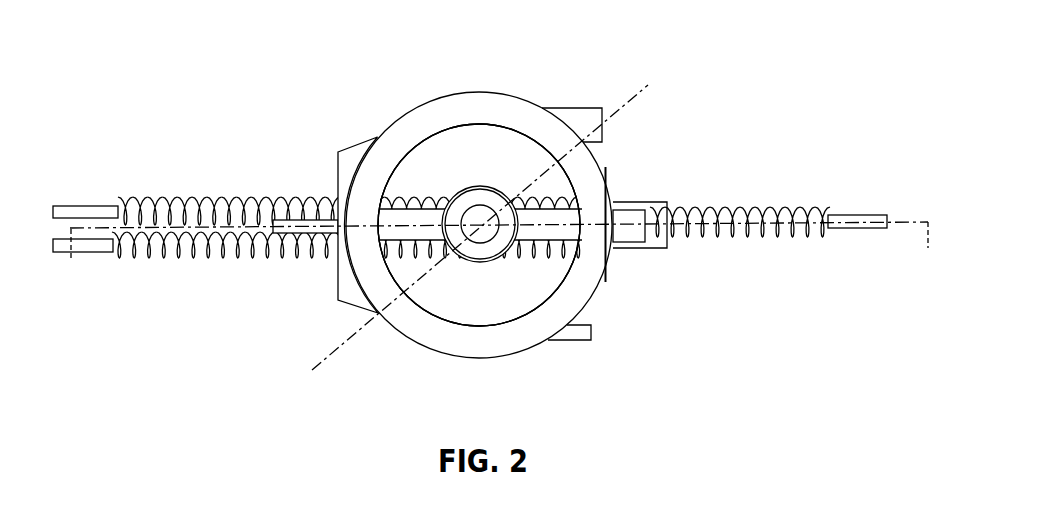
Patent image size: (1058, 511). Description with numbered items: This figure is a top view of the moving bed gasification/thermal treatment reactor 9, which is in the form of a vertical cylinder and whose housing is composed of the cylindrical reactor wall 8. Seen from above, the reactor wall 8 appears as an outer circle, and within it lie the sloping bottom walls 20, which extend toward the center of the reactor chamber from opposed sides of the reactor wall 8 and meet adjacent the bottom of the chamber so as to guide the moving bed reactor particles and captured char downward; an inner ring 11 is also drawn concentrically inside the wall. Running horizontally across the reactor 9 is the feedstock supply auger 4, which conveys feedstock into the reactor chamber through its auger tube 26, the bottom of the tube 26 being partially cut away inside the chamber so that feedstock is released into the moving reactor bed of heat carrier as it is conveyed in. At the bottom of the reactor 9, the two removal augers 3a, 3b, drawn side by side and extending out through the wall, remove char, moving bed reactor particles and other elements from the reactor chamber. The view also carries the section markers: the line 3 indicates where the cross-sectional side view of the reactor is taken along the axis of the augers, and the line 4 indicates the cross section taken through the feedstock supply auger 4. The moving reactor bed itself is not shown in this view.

The section line 3- 3 is at (499, 267).
The removal auger 3a is at (98, 192).
The removal auger 3b is at (95, 251).
The feedstock supply auger 4 is at (312, 370).
The cylindrical reactor wall 8 is at (440, 330).
The reactor 9 is at (415, 100).
The inner ring 11 is at (380, 170).
The sloping bottom walls 20 is at (512, 151).
The auger tube 26 is at (548, 230).